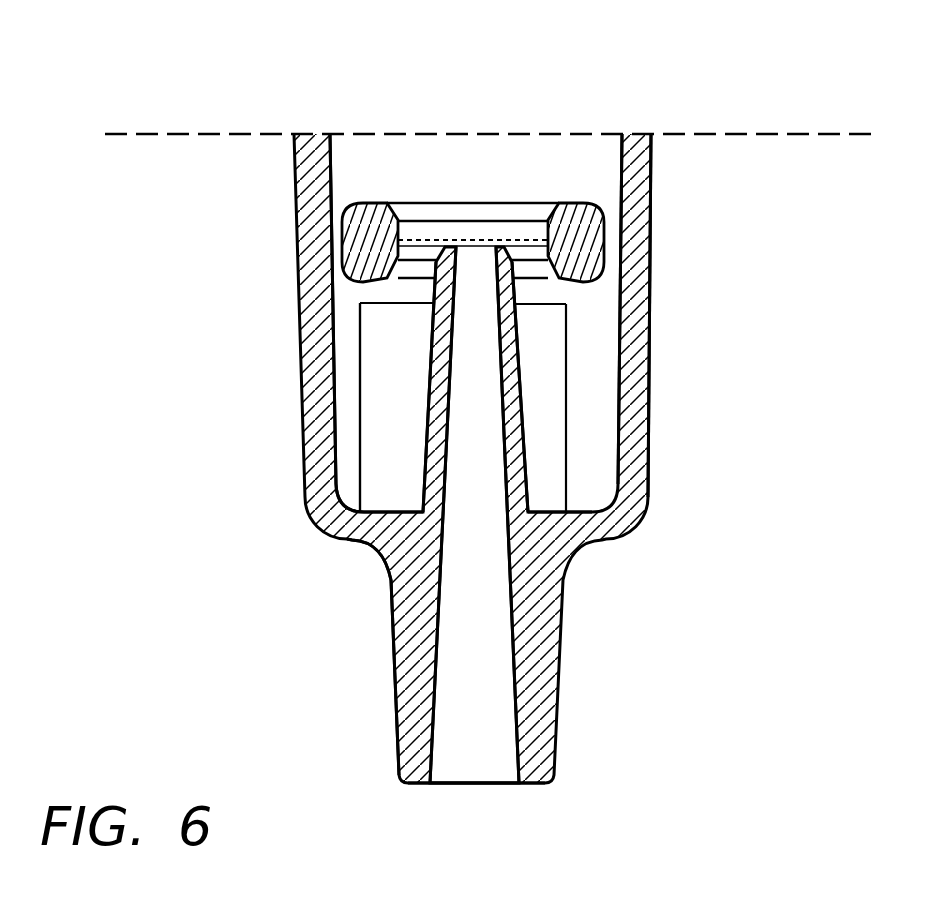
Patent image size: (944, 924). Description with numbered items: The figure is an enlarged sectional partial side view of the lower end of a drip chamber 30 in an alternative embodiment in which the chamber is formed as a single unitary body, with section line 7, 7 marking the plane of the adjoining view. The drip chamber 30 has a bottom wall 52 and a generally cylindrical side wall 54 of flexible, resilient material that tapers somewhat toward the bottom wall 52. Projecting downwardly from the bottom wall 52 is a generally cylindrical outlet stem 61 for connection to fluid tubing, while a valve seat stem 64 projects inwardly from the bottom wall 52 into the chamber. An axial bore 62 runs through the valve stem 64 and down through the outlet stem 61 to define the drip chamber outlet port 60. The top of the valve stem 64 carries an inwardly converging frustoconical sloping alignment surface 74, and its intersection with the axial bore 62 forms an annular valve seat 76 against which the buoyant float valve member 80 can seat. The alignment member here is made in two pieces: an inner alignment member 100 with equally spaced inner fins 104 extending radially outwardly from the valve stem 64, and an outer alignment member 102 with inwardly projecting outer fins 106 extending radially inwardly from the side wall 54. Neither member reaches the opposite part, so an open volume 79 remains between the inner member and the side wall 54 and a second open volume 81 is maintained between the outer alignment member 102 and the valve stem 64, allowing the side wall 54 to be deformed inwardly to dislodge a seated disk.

The section line 7- 7 is at (135, 114).
The drip chamber 30 is at (296, 246).
The bottom wall 52 is at (350, 543).
The cylindrical side wall 54 is at (652, 250).
The drip chamber outlet port 60 is at (414, 797).
The outlet stem 61 is at (392, 655).
The axial bore 62 is at (432, 738).
The valve seat stem 64 is at (528, 455).
The frustoconical sloping alignment surface 74 is at (500, 247).
The annular valve seat 76 is at (453, 253).
The open volume 79 is at (357, 458).
The float valve member 80 is at (618, 208).
The second open volume 81 is at (552, 417).
The inner alignment member 100 is at (346, 425).
The outer alignment member 102 is at (550, 315).
The inner fins 104 is at (378, 347).
The outer fins 106 is at (603, 400).